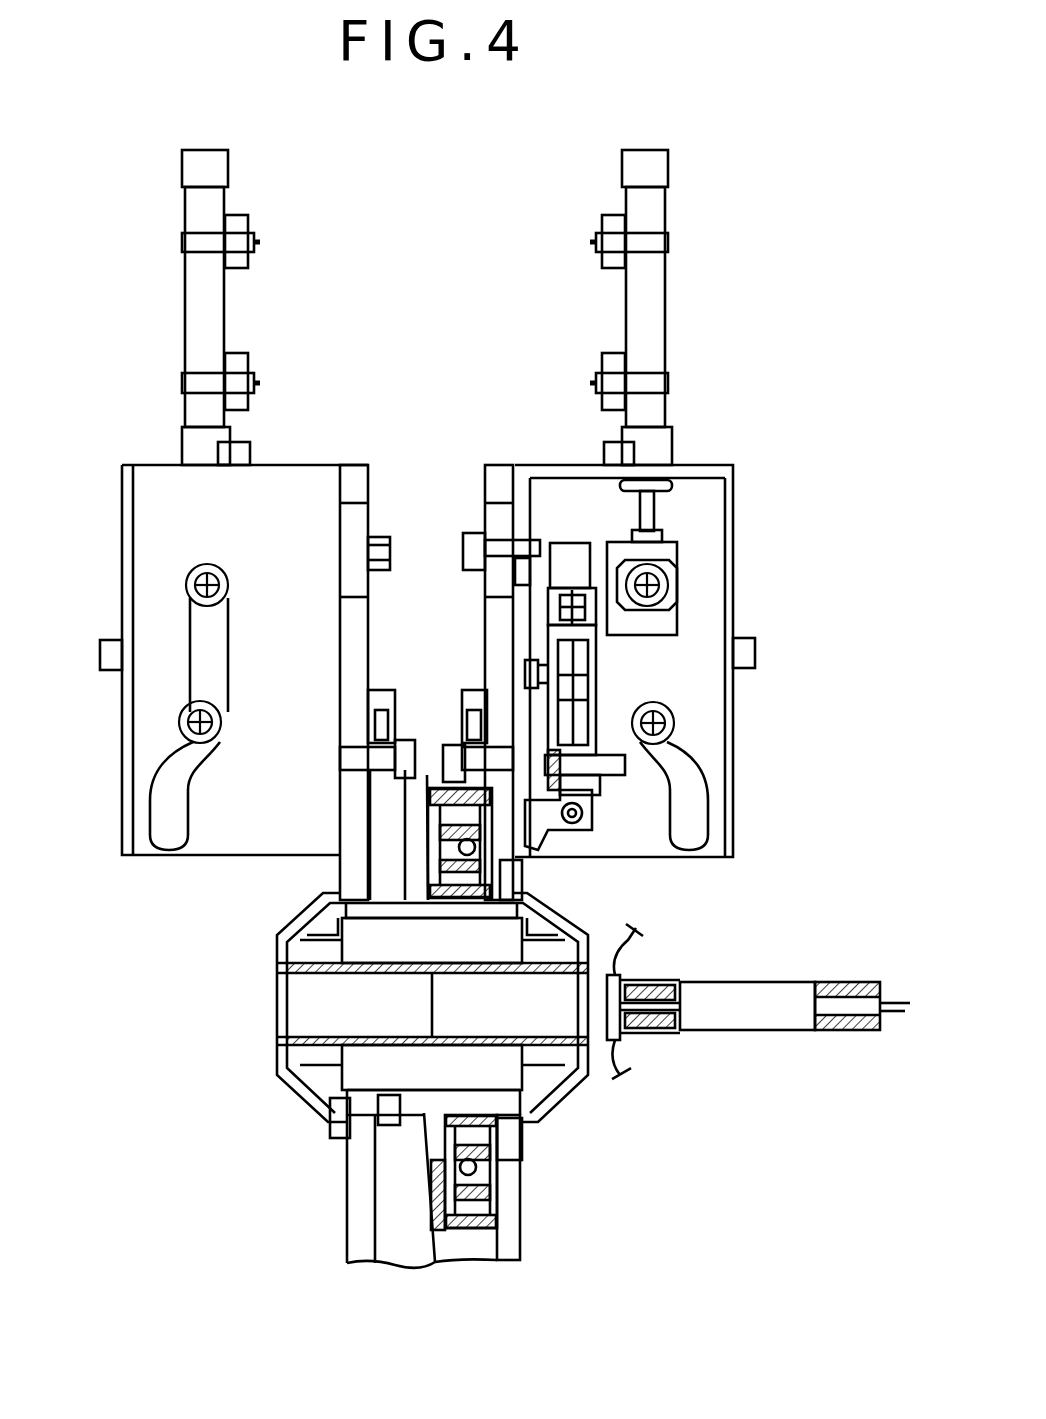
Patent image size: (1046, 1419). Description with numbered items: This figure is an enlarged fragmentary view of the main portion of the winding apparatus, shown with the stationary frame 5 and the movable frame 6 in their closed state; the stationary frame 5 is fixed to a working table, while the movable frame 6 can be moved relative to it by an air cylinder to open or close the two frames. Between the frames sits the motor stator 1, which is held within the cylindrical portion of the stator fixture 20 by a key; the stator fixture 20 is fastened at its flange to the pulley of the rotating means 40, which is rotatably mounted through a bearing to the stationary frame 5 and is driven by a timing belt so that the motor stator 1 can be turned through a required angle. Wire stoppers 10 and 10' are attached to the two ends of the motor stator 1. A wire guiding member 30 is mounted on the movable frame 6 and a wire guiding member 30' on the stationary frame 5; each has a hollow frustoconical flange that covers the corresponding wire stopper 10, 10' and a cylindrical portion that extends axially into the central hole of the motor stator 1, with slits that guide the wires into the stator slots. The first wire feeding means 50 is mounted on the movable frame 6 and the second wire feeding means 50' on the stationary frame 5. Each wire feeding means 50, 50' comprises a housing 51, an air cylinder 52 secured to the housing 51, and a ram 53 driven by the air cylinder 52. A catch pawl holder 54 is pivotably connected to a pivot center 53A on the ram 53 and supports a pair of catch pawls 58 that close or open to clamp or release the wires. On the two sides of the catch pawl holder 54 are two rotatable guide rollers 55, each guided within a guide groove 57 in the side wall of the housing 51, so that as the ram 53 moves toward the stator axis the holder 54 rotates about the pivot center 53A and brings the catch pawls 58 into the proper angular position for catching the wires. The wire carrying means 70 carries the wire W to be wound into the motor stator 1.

The motor stator 1 is at (340, 1095).
The stationary frame 5 is at (497, 480).
The movable frame 6 is at (355, 478).
The wire stopper 10 is at (371, 1007).
The wire stopper 10' is at (639, 1014).
The stator fixture 20 is at (416, 891).
The wire guiding member 30 is at (380, 1026).
The wire guiding member 30' is at (487, 1106).
The rotating means 40 is at (445, 788).
The first wire feeding means 50 is at (223, 558).
The second wire feeding means 50' is at (802, 427).
The housing 51 is at (735, 745).
The air cylinder 52 is at (662, 282).
The ram 53 is at (665, 548).
The pivot center 53A is at (668, 578).
The catch pawl holder 54 is at (655, 665).
The guide roller 55 is at (192, 578).
The guide groove 57 is at (160, 802).
The catch pawl 58 is at (550, 822).
The wire carrying means 70 is at (756, 972).
The wire W is at (632, 942).